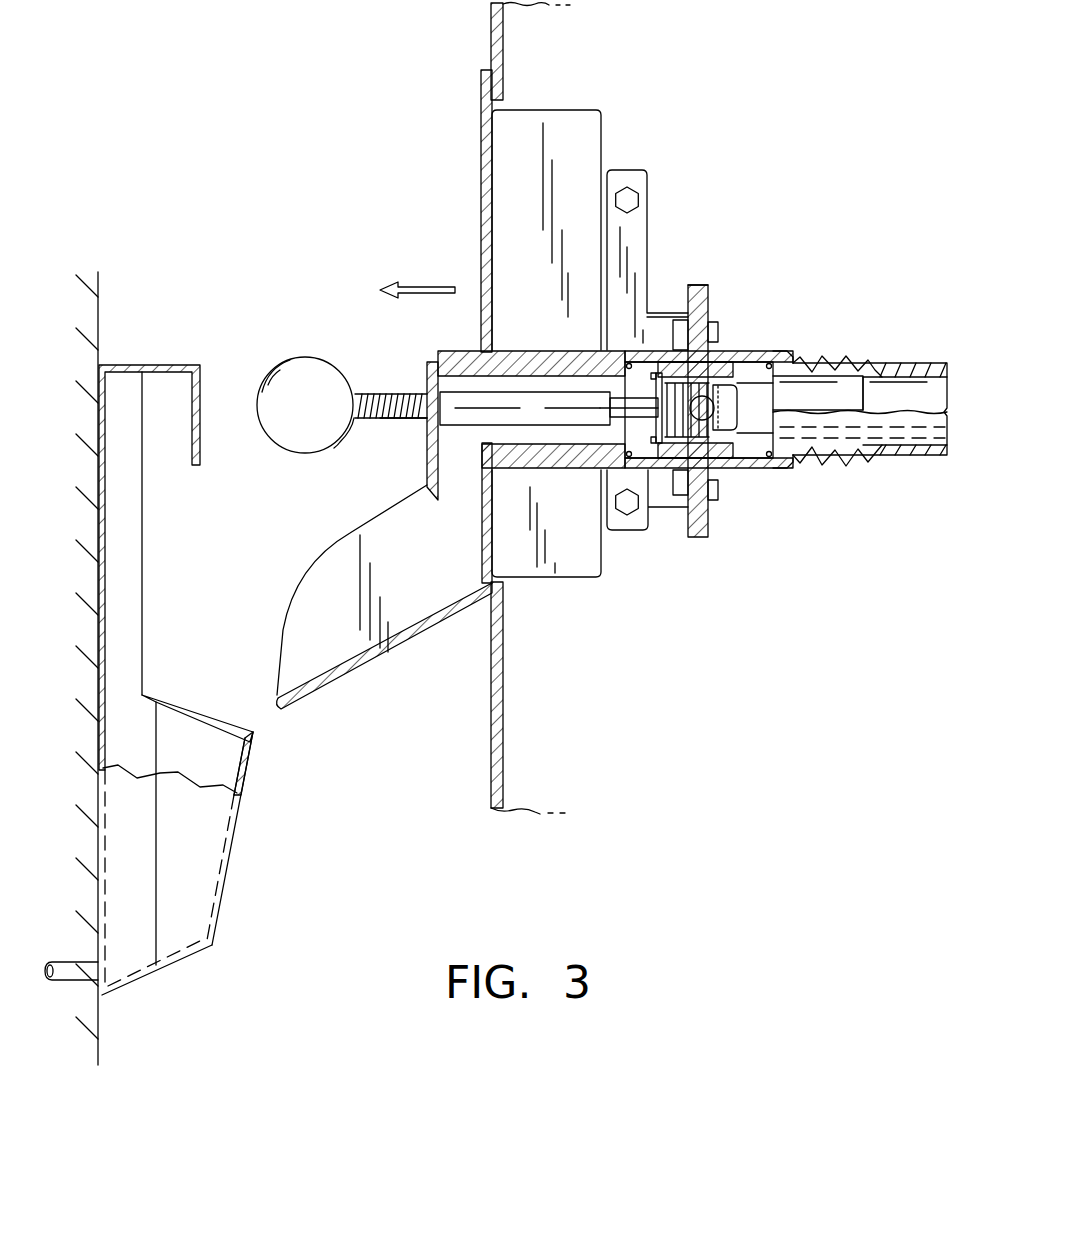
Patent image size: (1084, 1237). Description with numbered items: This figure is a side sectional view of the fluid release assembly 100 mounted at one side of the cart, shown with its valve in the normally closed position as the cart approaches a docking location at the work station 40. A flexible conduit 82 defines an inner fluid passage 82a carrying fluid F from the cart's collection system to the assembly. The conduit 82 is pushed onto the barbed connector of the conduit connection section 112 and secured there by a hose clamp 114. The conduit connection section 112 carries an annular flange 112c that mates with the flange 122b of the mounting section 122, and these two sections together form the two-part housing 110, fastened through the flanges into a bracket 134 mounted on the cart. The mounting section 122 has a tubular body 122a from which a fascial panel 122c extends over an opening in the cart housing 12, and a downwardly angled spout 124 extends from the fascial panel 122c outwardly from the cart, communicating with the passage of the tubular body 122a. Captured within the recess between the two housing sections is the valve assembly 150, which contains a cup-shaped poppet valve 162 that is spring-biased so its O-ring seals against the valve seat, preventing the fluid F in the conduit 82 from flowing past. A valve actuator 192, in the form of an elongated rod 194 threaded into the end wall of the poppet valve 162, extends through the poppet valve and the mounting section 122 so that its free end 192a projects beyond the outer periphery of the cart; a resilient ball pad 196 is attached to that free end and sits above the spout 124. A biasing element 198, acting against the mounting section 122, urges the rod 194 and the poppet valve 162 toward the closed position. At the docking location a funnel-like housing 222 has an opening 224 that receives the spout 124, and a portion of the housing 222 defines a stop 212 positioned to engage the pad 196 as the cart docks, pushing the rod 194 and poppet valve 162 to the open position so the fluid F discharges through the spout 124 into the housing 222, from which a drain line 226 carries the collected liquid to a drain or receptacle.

The work station 40 is at (100, 316).
The stop 212 is at (200, 392).
The pad 196 is at (304, 370).
The free end 192a is at (365, 384).
The biasing element 198 is at (397, 421).
The fascial panel 122c is at (481, 157).
The mounting section 122 is at (520, 347).
The bracket 134 is at (623, 178).
The fluid release assembly 100 is at (692, 214).
The annular flange 112c is at (708, 292).
The flange 122b is at (688, 297).
The housing 110 is at (750, 306).
The valve assembly 150 is at (737, 350).
The conduit connection section 112 is at (772, 347).
The inner fluid passage 82a is at (888, 390).
The flexible conduit 82 is at (913, 360).
The spout 124 is at (320, 578).
The valve actuator 192 is at (467, 429).
The poppet valve 162 is at (745, 434).
The rod 194 is at (631, 413).
The hose clamp 114 is at (830, 460).
The fluid F is at (877, 434).
The tubular body 122a is at (553, 462).
The housing 12 is at (491, 745).
The opening 224 is at (172, 720).
The funnel-like housing 222 is at (240, 843).
The drain line 226 is at (62, 978).